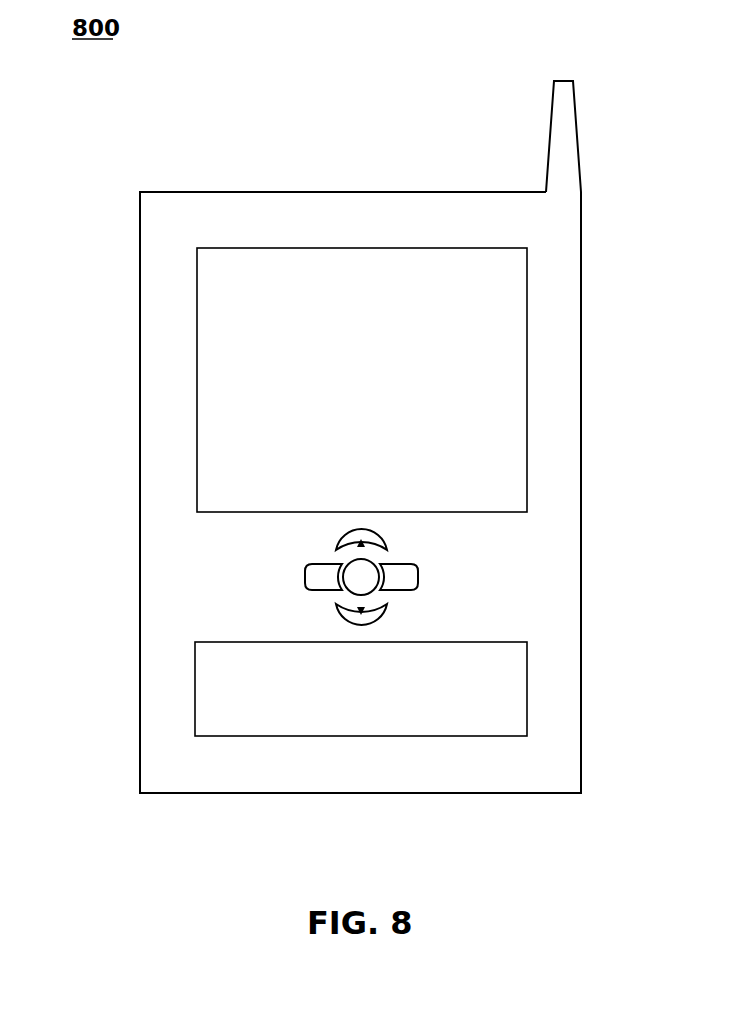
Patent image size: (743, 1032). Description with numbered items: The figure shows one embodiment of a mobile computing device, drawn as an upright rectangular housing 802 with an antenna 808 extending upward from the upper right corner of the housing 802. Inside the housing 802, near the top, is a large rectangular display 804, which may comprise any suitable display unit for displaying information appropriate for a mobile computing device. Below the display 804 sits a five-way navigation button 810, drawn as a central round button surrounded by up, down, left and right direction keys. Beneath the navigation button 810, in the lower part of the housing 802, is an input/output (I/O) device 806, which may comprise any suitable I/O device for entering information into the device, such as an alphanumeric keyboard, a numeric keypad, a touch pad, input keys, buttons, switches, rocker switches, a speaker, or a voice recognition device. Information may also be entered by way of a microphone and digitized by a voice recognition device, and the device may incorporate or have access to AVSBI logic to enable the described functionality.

The housing 802 is at (582, 493).
The display 804 is at (527, 268).
The input/output (I/O) device 806 is at (527, 681).
The antenna 808 is at (548, 128).
The five-way navigation button 810 is at (430, 568).